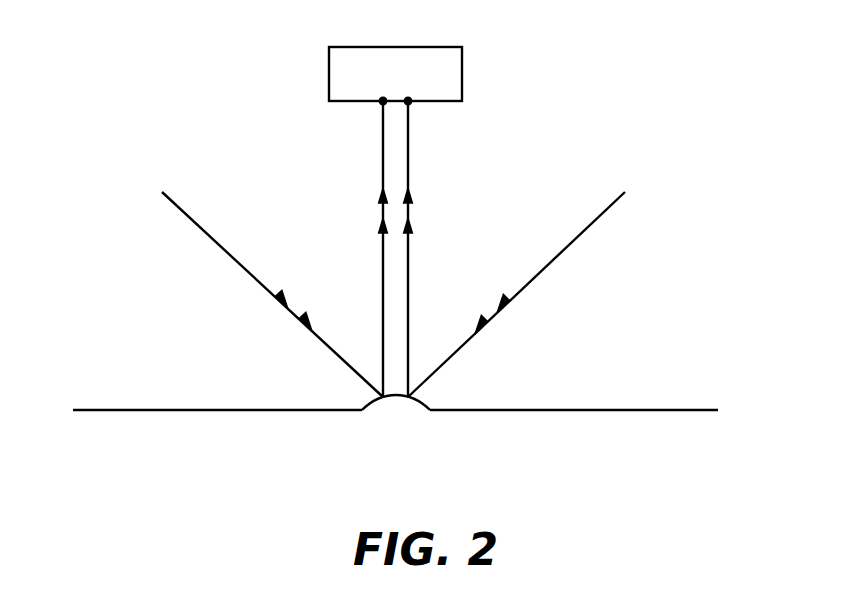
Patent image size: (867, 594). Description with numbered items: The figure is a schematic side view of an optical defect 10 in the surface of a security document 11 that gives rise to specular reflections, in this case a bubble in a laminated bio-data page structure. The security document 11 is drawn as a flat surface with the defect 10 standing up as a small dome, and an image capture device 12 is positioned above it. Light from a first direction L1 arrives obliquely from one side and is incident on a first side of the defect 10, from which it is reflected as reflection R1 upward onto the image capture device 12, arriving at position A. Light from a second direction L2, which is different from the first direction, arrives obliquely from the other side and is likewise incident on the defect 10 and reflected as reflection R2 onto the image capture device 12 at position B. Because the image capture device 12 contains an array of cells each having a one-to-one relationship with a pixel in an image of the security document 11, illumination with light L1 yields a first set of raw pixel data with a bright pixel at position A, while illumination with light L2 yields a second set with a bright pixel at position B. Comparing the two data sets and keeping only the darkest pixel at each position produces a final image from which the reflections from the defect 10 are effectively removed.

The optical defect 10 is at (374, 402).
The security document 11 is at (125, 389).
The image capture device 12 is at (462, 74).
The position A is at (381, 102).
The position B is at (410, 102).
The light from a first direction L1 is at (272, 294).
The light from a second direction L2 is at (516, 294).
The reflection R1 is at (365, 249).
The reflection R2 is at (425, 249).